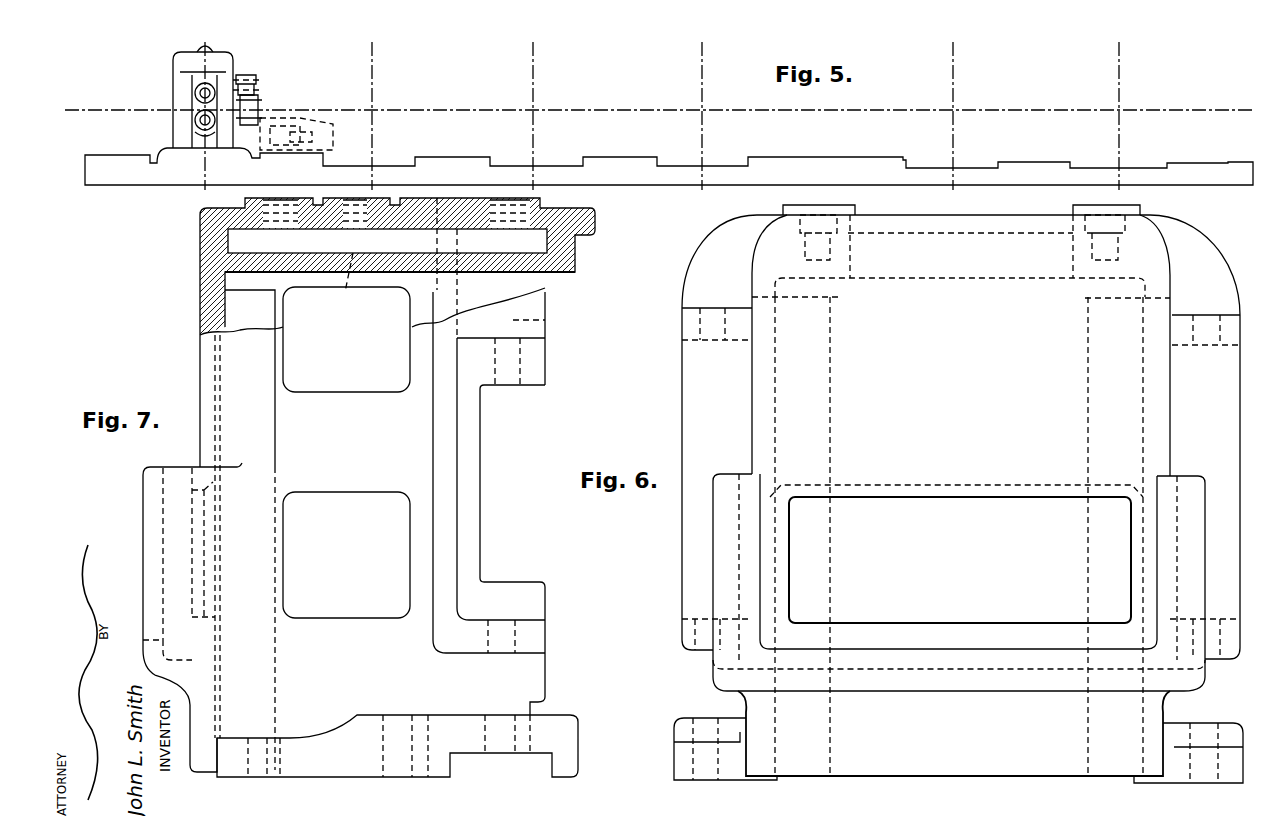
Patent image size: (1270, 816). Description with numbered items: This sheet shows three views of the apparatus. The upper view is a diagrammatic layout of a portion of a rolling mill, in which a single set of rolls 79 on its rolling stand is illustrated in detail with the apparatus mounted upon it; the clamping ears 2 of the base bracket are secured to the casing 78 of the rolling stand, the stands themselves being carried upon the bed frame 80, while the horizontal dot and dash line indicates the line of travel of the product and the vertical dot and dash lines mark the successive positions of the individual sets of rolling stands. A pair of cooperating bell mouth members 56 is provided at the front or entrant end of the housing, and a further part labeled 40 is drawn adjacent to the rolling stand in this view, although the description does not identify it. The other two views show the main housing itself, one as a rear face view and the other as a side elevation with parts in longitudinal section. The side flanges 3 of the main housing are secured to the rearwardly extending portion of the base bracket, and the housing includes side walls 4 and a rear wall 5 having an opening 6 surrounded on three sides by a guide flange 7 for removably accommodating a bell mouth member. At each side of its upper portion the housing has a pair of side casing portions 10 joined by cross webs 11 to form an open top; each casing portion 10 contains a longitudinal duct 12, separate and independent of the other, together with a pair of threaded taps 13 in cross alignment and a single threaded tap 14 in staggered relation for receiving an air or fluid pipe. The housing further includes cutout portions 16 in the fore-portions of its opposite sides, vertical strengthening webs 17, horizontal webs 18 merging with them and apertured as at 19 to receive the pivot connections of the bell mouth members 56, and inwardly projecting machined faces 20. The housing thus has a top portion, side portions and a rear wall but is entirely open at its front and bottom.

In FIG. 5, the side ears 2 is at (245, 128).
In FIG. 7, the side flanges 3 is at (455, 721).
In FIG. 6, the side flanges 3 is at (702, 722).
In FIG. 7, the side walls 4 is at (357, 400).
In FIG. 6, the side walls 4 is at (757, 400).
In FIG. 7, the rear wall 5 is at (240, 331).
In FIG. 6, the rear wall 5 is at (958, 552).
In FIG. 7, the opening 6 is at (208, 503).
In FIG. 6, the opening 6 is at (968, 496).
In FIG. 7, the guide flange 7 is at (163, 530).
In FIG. 6, the guide flange 7 is at (713, 597).
In FIG. 7, the side casing portions 10 is at (235, 288).
In FIG. 6, the side casing portions 10 is at (848, 272).
In FIG. 7, the cross webs 11 is at (346, 339).
In FIG. 6, the cross webs 11 is at (920, 223).
In FIG. 7, the longitudinal duct 12 is at (240, 262).
In FIG. 6, the longitudinal duct 12 is at (800, 248).
In FIG. 7, the threaded taps 13 is at (245, 212).
In FIG. 6, the threaded taps 13 is at (783, 213).
In FIG. 7, the single threaded tap 14 is at (352, 232).
In FIG. 7, the cutout portions 16 is at (535, 388).
In FIG. 7, the vertical strengthening webs 17 is at (437, 415).
In FIG. 6, the vertical strengthening webs 17 is at (685, 390).
In FIG. 7, the horizontal webs 18 is at (530, 345).
In FIG. 6, the horizontal webs 18 is at (730, 316).
In FIG. 7, the apertures 19 is at (515, 322).
In FIG. 6, the apertures 19 is at (705, 316).
In FIG. 7, the machined faces 20 is at (235, 320).
In FIG. 6, the machined faces 20 is at (833, 420).
In FIG. 5, the gear 40 is at (262, 69).
In FIG. 5, the bell mouth members 56 is at (258, 106).
In FIG. 5, the casing 78 is at (178, 128).
In FIG. 5, the rolls 79 is at (194, 119).
In FIG. 5, the bed frame 80 is at (636, 160).